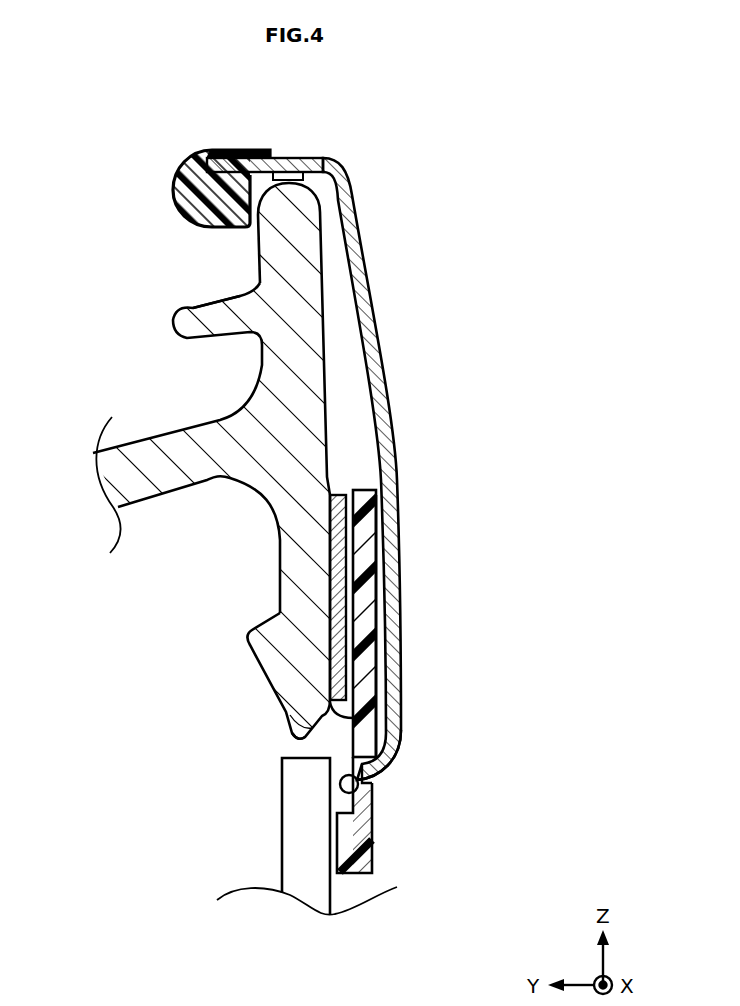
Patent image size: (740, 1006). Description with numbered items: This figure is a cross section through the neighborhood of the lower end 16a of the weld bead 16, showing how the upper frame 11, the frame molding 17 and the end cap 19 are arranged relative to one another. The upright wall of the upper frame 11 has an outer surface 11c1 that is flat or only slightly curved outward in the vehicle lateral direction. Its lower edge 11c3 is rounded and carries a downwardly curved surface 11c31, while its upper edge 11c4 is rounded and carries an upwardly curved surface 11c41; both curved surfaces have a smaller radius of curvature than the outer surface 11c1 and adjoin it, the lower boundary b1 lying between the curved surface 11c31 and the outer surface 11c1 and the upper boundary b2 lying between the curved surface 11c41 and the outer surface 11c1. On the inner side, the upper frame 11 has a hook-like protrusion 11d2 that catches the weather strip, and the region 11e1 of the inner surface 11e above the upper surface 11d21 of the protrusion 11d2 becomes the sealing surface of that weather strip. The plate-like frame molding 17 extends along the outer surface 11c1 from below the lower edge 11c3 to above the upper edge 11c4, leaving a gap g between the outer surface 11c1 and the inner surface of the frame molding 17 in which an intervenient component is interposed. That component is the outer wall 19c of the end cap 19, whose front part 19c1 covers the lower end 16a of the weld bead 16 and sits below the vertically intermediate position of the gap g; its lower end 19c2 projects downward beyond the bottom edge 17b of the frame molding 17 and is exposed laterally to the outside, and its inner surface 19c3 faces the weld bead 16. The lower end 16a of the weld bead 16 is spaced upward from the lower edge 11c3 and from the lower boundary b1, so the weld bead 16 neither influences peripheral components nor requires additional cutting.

The upper frame 11 is at (370, 453).
The outer surface 11c1 is at (327, 350).
The lower edge 11c3 is at (254, 690).
The curved surface 11c31 is at (303, 742).
The upper edge 11c4 is at (246, 146).
The curved surface 11c41 is at (286, 180).
The protrusion 11d2 is at (190, 326).
The upper surface 11d21 is at (207, 300).
The inner surface 11e is at (262, 360).
The region 11e1 is at (257, 261).
The weld bead 16 is at (402, 607).
The lower end 16a is at (355, 720).
The frame molding 17 is at (397, 450).
The bottom edge 17b is at (350, 795).
The end cap 19 is at (355, 734).
The outer wall 19c is at (344, 873).
The front part 19c1 is at (368, 621).
The lower end 19c2 is at (357, 874).
The inner surface 19c3 is at (330, 847).
The lower boundary b1 is at (384, 749).
The upper boundary b2 is at (323, 212).
The gap g is at (350, 412).